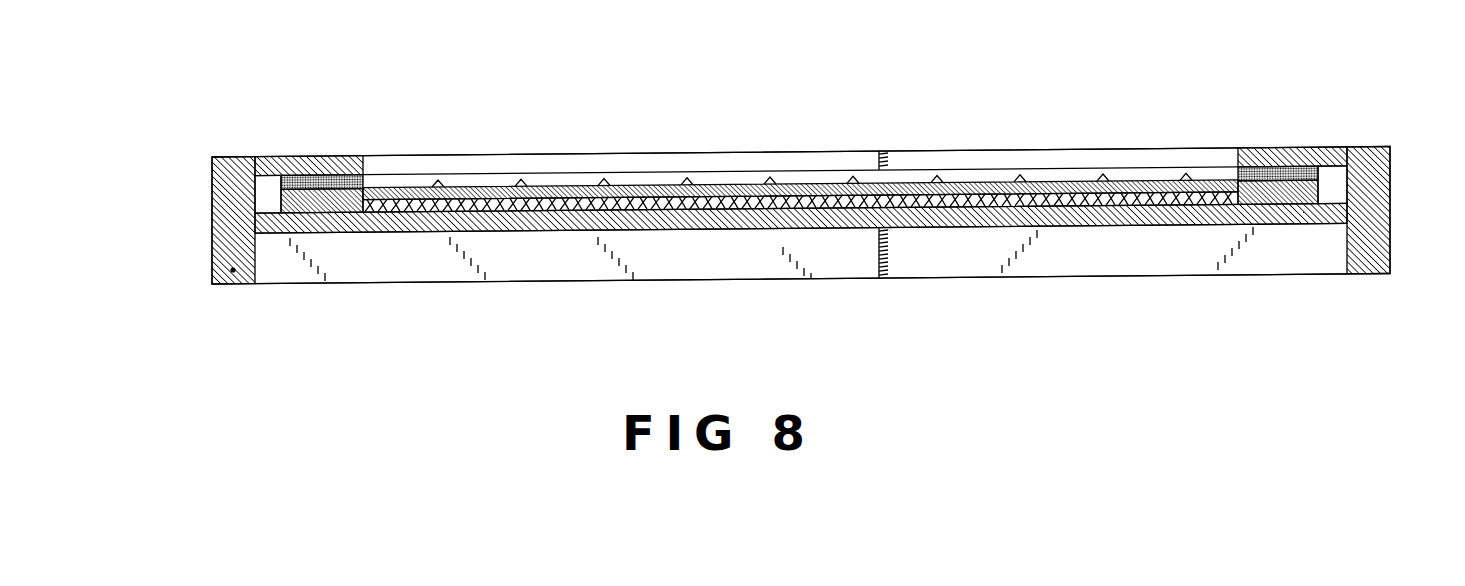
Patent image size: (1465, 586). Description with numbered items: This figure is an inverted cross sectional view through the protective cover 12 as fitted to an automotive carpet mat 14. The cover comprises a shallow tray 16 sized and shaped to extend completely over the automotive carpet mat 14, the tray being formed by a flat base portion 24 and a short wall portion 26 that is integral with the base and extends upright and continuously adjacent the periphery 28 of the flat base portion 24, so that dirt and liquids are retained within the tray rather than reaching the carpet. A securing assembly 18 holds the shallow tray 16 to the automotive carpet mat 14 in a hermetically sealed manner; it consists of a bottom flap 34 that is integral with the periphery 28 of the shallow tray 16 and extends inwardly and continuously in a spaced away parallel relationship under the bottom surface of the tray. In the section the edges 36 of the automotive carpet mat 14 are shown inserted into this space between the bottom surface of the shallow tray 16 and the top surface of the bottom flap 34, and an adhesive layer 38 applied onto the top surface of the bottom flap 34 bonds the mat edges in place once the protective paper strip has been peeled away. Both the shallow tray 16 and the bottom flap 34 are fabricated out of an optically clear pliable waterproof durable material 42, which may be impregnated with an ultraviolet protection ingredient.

The protective cover 12 is at (1099, 89).
The automotive carpet mat 14 is at (500, 178).
The shallow tray 16 is at (1116, 287).
The securing assembly 18 is at (333, 148).
The flat base portion 24 is at (543, 240).
The short wall portion 26 is at (677, 288).
The periphery 28 is at (211, 203).
The bottom flap 34 is at (1328, 160).
The edges of the automotive carpet mat 36 is at (268, 200).
The adhesive layer 38 is at (1293, 162).
The optically clear pliable waterproof durable material 42 is at (233, 273).